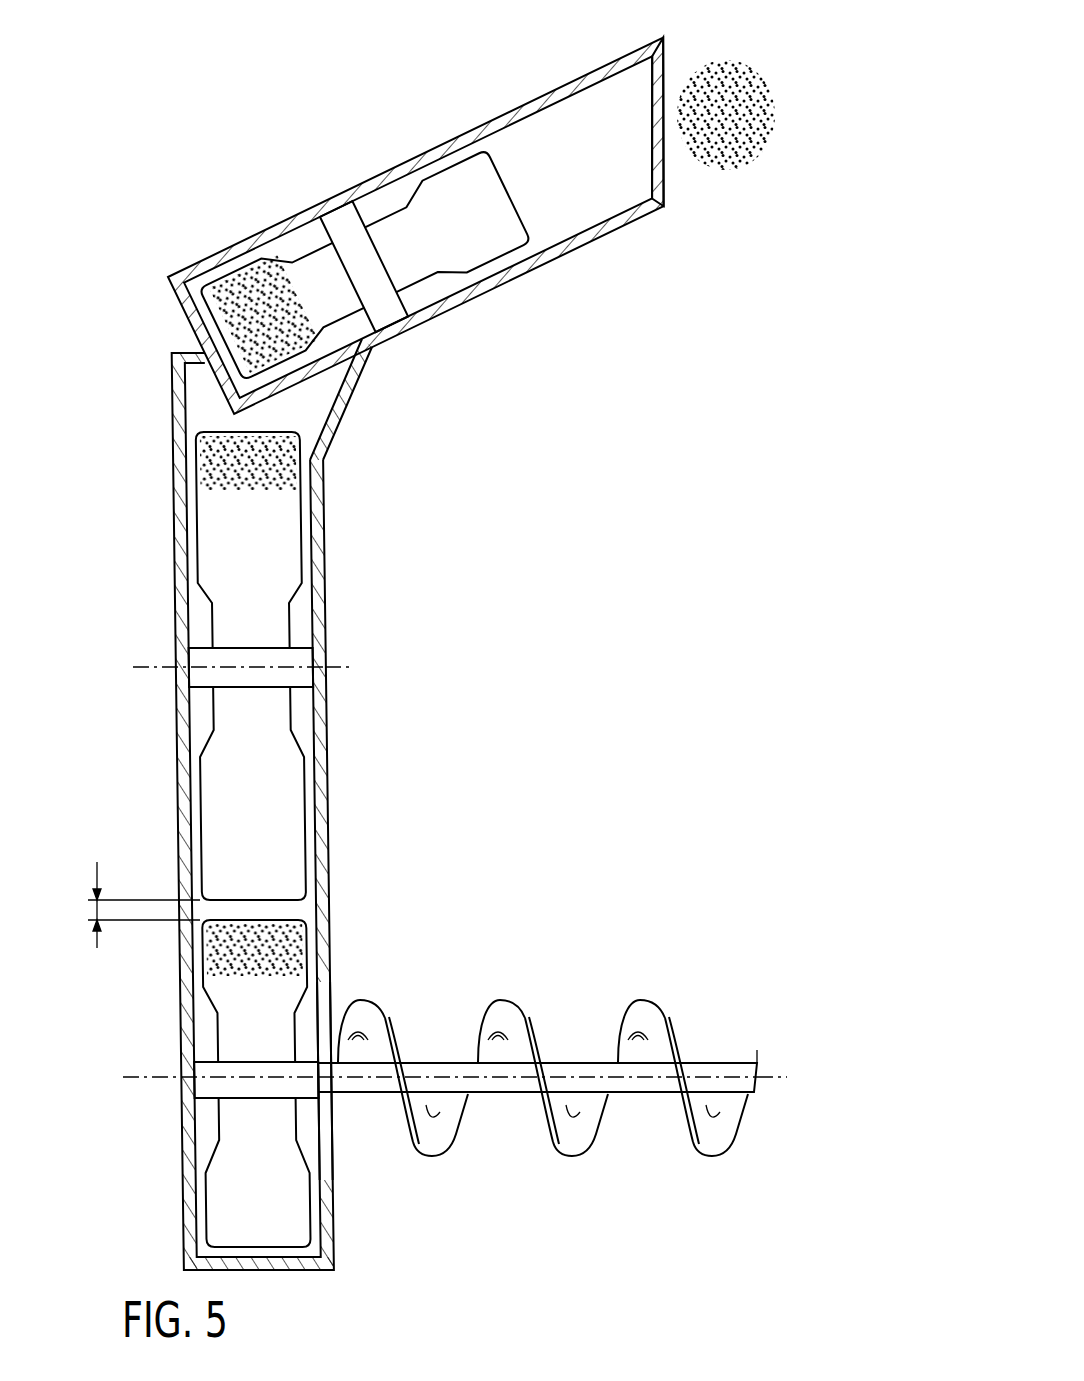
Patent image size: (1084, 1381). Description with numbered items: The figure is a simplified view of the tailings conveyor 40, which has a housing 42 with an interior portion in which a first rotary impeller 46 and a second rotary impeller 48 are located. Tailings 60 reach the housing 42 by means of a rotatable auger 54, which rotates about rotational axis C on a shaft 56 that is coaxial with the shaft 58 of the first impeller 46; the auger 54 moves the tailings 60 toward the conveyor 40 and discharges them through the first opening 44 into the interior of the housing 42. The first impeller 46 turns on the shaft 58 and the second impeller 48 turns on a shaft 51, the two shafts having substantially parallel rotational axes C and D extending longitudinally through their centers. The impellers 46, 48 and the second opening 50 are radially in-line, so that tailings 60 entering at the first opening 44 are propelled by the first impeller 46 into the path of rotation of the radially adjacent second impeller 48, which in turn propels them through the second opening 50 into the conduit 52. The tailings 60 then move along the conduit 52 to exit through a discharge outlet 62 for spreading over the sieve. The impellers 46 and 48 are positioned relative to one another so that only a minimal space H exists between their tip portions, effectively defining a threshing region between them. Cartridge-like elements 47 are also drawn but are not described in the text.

The tailings conveyor 40 is at (238, 796).
The housing 42 is at (326, 577).
The first opening 44 is at (327, 993).
The first rotary impeller 46 is at (222, 988).
The cartridges 47 is at (412, 190).
The second rotary impeller 48 is at (218, 578).
The second opening 50 is at (325, 367).
The shaft 51 is at (334, 680).
The conduit 52 is at (543, 133).
The auger 54 is at (587, 1123).
The shaft 56 is at (567, 1060).
The shaft 58 is at (182, 1087).
The tailings 60 is at (737, 78).
The discharge outlet 62 is at (661, 181).
The rotational axis D is at (345, 663).
The minimal space H is at (99, 875).
The rotational axis C is at (775, 1080).